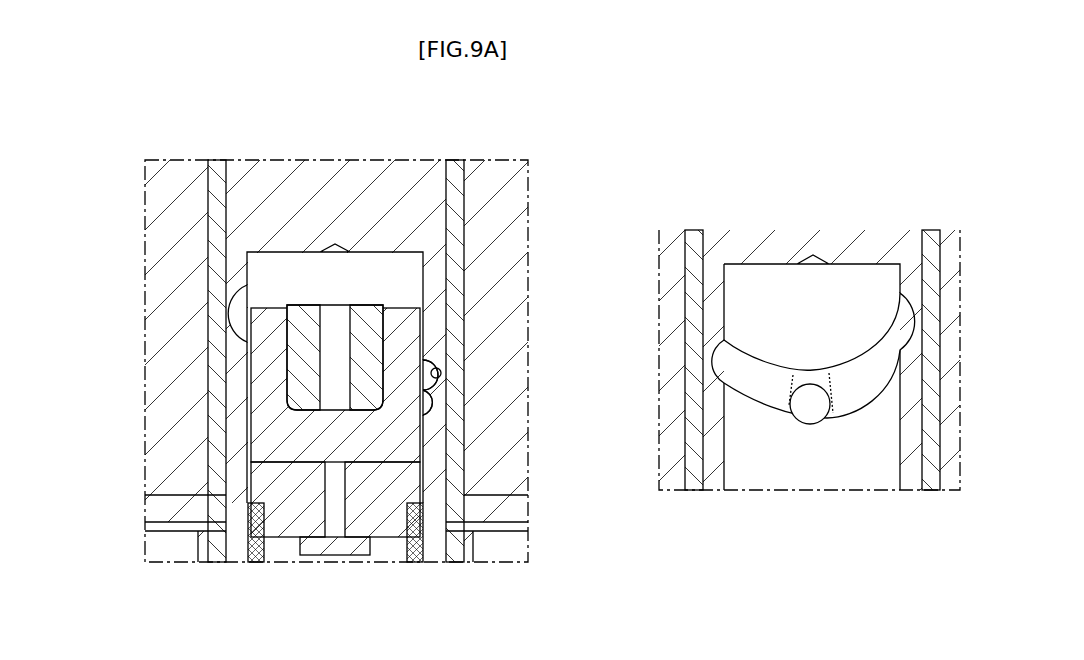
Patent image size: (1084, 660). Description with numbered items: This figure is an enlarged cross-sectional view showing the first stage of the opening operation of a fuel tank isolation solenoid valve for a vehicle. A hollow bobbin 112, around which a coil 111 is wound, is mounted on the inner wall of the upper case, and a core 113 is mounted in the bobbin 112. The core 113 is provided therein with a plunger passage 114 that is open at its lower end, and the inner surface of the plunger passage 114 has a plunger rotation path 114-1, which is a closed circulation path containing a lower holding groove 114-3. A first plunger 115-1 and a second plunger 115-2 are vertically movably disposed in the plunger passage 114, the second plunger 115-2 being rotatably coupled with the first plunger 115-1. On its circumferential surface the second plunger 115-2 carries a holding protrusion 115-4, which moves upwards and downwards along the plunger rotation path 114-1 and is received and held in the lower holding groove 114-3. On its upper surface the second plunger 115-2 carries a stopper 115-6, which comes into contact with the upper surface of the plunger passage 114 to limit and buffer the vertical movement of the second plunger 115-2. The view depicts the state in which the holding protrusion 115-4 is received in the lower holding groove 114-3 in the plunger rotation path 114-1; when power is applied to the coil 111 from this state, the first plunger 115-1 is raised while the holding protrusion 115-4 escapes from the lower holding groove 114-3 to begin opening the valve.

The coil 111 is at (163, 322).
The bobbin 112 is at (218, 372).
The core 113 is at (330, 188).
The plunger passage 114 is at (249, 268).
The plunger rotation path 114-1 is at (437, 378).
The lower holding groove 114-3 is at (430, 392).
The first plunger 115-1 is at (277, 512).
The second plunger 115-2 is at (272, 430).
The holding protrusion 115-4 is at (430, 370).
The stopper 115-6 is at (362, 315).